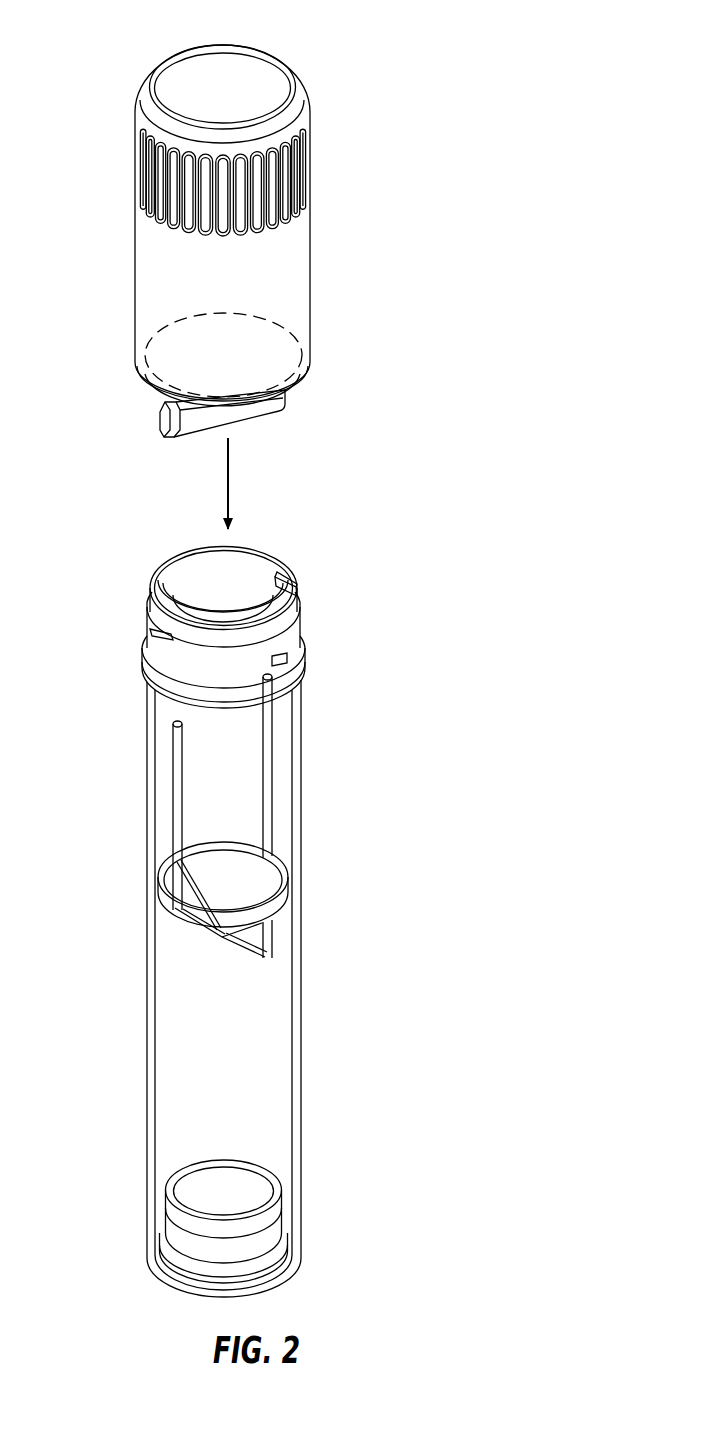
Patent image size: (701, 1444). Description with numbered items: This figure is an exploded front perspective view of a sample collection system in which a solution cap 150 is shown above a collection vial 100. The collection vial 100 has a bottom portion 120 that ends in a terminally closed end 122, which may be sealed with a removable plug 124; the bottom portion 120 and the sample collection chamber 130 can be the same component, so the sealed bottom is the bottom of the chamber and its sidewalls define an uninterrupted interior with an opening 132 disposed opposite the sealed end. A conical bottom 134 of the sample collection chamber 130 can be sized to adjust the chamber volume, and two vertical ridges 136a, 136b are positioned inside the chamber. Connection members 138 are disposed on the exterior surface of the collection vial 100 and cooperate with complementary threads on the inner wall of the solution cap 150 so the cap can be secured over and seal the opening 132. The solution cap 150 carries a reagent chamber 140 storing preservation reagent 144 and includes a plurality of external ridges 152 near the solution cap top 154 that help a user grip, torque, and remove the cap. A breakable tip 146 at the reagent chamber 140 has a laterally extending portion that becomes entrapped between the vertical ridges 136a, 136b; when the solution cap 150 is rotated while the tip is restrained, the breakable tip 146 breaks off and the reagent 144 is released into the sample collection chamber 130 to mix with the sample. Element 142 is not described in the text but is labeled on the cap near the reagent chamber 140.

The collection vial 100 is at (389, 613).
The bottom portion 120 is at (276, 1052).
The terminally closed end 122 is at (304, 1266).
The removable plug 124 is at (280, 1203).
The sample collection chamber 130 is at (246, 820).
The opening 132 is at (197, 571).
The conical bottom 134 is at (178, 920).
The vertical ridge 136a is at (172, 778).
The vertical ridge 136b is at (277, 778).
The connection member 138 is at (288, 658).
The reagent chamber 140 is at (222, 248).
The cap bottom opening 142 is at (243, 362).
The preservation reagent 144 is at (207, 372).
The breakable tip 146 is at (255, 425).
The solution cap 150 is at (316, 155).
The external ridges 152 is at (131, 152).
The solution cap top 154 is at (212, 67).